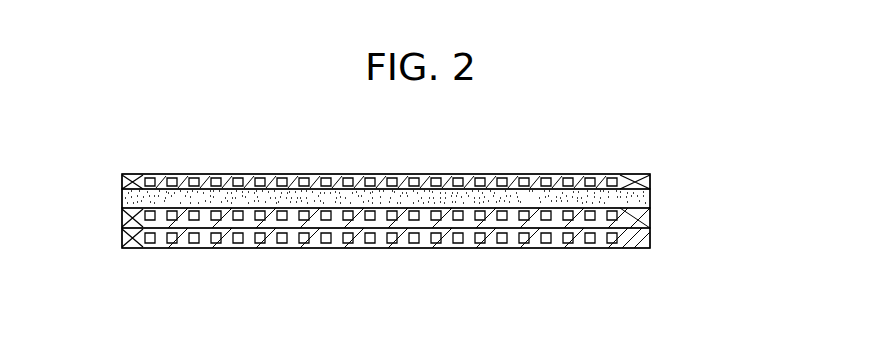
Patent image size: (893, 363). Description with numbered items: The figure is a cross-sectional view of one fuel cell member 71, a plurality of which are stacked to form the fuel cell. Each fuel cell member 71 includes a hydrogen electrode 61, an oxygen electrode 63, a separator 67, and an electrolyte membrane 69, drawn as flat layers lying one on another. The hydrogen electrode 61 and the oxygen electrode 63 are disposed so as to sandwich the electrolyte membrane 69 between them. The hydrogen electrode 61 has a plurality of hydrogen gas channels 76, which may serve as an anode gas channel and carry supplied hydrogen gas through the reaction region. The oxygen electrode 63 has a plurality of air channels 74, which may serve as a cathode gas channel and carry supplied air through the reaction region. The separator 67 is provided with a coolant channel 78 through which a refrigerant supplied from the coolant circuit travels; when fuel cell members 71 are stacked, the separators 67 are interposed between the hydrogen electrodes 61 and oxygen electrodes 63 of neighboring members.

The hydrogen electrode 61 is at (651, 183).
The electrolyte membrane 69 is at (651, 197).
The oxygen electrode 63 is at (651, 213).
The separator 67 is at (651, 237).
The fuel cell member 71 is at (773, 322).
The hydrogen gas channels 76 is at (121, 180).
The air channels 74 is at (121, 212).
The coolant channel 78 is at (121, 238).